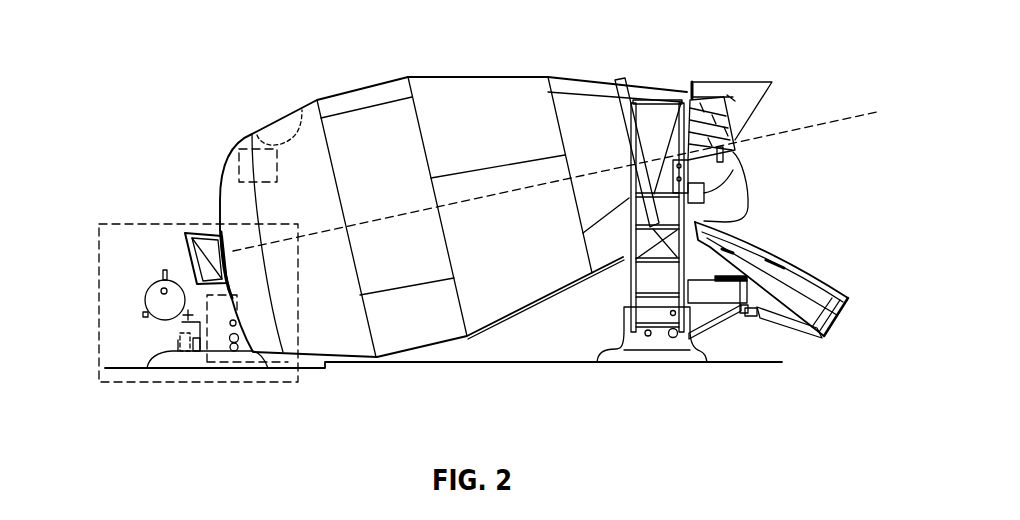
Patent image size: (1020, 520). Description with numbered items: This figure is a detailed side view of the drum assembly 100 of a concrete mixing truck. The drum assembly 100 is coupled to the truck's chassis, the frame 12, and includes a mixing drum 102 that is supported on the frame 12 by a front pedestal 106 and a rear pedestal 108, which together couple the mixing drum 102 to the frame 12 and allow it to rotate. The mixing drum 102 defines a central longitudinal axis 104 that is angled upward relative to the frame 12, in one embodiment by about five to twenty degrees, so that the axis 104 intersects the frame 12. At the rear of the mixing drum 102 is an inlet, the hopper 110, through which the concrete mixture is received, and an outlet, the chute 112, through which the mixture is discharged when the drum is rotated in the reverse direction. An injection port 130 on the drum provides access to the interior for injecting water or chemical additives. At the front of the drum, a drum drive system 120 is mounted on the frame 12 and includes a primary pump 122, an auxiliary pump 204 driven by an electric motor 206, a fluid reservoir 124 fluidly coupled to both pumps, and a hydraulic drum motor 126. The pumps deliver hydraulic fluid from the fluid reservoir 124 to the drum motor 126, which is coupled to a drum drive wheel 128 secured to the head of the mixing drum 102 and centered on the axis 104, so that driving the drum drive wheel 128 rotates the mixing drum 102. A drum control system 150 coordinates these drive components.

The drum assembly 100 is at (251, 52).
The mixing drum 102 is at (502, 90).
The axis 104 is at (823, 113).
The front pedestal 106 is at (227, 360).
The rear pedestal 108 is at (662, 348).
The hopper 110 is at (733, 82).
The chute 112 is at (824, 281).
The frame 12 is at (487, 361).
The drum drive system 120 is at (118, 222).
The primary pump 122 is at (177, 323).
The fluid reservoir 124 is at (155, 303).
The drum motor 126 is at (277, 357).
The drum drive wheel 128 is at (190, 262).
The injection port 130 is at (248, 152).
The drum control system 150 is at (227, 313).
The auxiliary pump 204 is at (197, 347).
The electric motor 206 is at (187, 347).